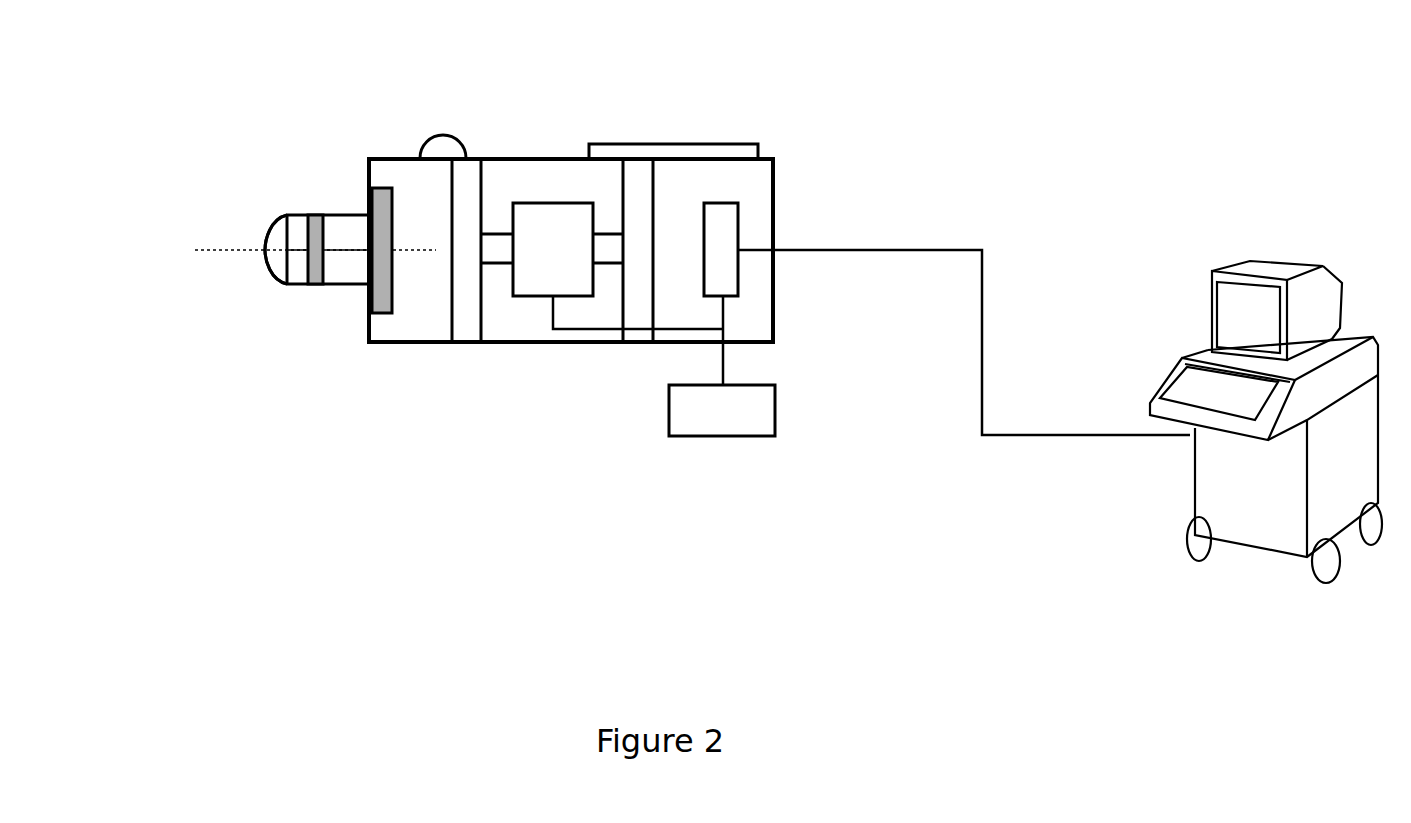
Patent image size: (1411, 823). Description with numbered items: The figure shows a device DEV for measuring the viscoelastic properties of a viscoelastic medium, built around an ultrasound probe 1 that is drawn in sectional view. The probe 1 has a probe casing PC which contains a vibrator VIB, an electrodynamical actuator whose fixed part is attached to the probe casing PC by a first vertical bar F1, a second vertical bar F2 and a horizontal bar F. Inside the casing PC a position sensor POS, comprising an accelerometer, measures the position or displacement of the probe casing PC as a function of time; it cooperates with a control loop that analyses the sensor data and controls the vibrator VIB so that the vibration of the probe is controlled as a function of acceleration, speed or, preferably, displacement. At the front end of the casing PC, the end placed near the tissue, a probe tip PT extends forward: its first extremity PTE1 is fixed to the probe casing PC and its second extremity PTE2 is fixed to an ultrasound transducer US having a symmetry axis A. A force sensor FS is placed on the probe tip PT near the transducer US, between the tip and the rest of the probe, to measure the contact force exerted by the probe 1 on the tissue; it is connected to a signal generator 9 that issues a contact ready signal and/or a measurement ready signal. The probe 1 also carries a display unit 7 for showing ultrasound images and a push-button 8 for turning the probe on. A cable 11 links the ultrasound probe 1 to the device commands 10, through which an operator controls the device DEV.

The ultrasound probe 1 is at (330, 155).
The display unit 7 is at (673, 142).
The push-button 8 is at (443, 137).
The signal generator 9 is at (722, 438).
The device commands 10 is at (1165, 462).
The cable 11 is at (998, 255).
The symmetry axis A is at (201, 238).
The probe tip PT is at (306, 196).
The first extremity of the probe tip PTE1 is at (388, 246).
The second extremity of the probe tip PTE2 is at (292, 288).
The force sensor FS is at (314, 288).
The ultrasound transducer US is at (262, 249).
The probe casing PC is at (512, 344).
The first vertical bar F1 is at (467, 319).
The second vertical bar F2 is at (639, 300).
The horizontal bar F is at (507, 230).
The vibrator VIB is at (553, 202).
The position sensor POS is at (722, 198).
The device DEV is at (227, 560).